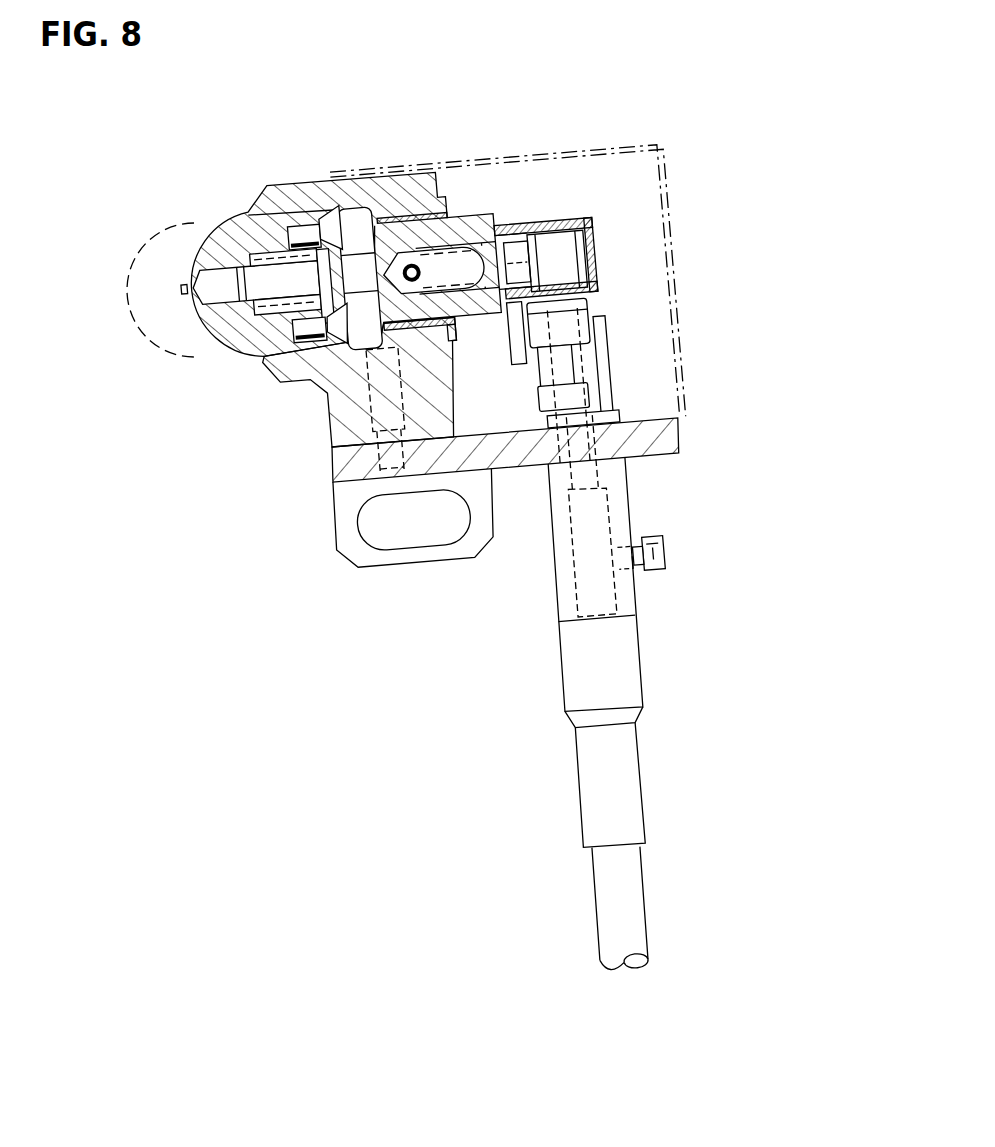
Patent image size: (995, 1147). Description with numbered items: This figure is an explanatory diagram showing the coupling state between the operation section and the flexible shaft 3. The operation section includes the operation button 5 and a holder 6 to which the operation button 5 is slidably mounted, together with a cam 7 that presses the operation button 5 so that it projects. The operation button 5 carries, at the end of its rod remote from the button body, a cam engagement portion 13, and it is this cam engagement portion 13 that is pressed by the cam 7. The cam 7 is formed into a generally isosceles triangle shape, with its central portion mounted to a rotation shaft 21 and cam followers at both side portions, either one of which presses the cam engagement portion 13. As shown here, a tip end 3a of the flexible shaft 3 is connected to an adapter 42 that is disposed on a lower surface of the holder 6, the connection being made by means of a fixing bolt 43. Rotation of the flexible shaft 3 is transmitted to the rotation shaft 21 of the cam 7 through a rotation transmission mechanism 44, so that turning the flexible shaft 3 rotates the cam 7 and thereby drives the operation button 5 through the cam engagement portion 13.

The flexible shaft 3 is at (651, 772).
The tip end 3a is at (600, 603).
The operation button 5 is at (220, 220).
The holder 6 is at (688, 402).
The cam 7 is at (601, 302).
The cam engagement portion 13 is at (513, 337).
The rotation shaft 21 is at (580, 325).
The adapter 42 is at (602, 478).
The fixing bolt 43 is at (662, 542).
The rotation transmission mechanism 44 is at (623, 372).